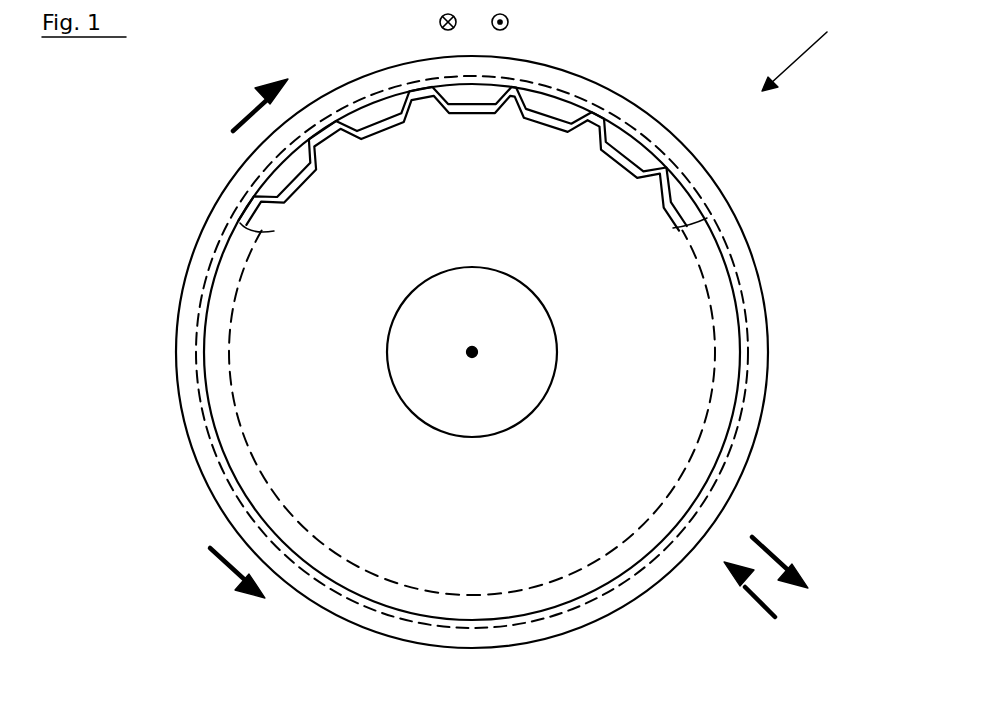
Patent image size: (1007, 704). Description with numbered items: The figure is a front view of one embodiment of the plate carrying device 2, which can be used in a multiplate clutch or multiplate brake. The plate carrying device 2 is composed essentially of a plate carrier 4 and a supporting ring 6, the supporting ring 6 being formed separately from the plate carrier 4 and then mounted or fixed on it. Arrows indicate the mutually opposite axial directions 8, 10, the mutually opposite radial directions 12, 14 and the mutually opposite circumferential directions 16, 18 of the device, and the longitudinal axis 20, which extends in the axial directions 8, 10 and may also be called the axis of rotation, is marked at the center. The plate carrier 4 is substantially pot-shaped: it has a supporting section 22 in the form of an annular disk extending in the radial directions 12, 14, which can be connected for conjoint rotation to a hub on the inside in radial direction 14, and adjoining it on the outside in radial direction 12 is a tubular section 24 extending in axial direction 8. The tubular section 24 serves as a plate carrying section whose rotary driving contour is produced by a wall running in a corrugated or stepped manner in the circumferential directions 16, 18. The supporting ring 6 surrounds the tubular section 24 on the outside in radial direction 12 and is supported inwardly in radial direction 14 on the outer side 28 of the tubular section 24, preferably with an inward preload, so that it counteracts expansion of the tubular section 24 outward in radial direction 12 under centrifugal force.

The plate carrying device 2 is at (805, 50).
The plate carrier 4 is at (222, 343).
The supporting ring 6 is at (214, 178).
The axial direction 8 is at (509, 22).
The axial direction 10 is at (439, 22).
The radial direction 12 is at (778, 558).
The radial direction 14 is at (762, 610).
The circumferential direction 16 is at (238, 572).
The circumferential direction 18 is at (248, 112).
The longitudinal axis 20 is at (477, 352).
The supporting section 22 is at (635, 284).
The tubular section 24 is at (613, 131).
The outer side 28 is at (320, 122).